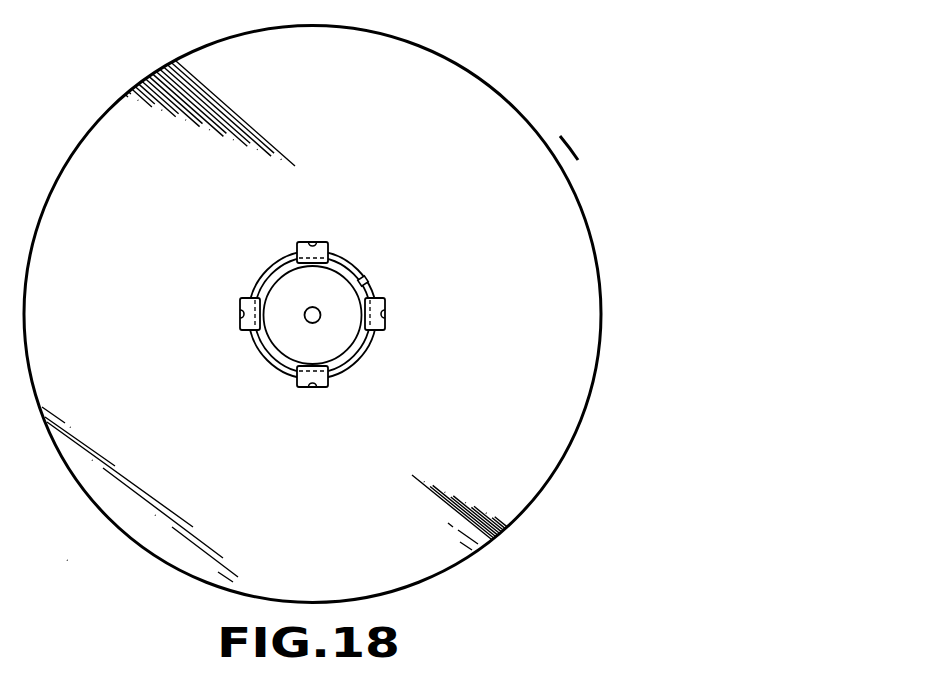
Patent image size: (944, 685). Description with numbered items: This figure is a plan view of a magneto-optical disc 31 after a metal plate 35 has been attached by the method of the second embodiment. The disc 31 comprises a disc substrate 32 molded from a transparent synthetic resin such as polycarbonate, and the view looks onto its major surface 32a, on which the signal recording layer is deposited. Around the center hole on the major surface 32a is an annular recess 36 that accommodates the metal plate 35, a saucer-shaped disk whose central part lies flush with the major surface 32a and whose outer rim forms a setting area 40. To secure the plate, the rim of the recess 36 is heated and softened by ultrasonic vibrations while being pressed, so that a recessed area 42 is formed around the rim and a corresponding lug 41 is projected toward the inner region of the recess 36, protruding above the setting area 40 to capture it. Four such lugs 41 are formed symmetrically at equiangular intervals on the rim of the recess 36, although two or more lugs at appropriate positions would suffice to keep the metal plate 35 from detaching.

The magneto-optical disc 31 is at (630, 320).
The disc substrate 32 is at (240, 313).
The major surface 32a is at (540, 165).
The metal plate 35 is at (288, 343).
The annular recess 36 is at (367, 278).
The setting area 40 is at (354, 355).
The lug 41 is at (262, 277).
The recessed area 42 is at (316, 241).